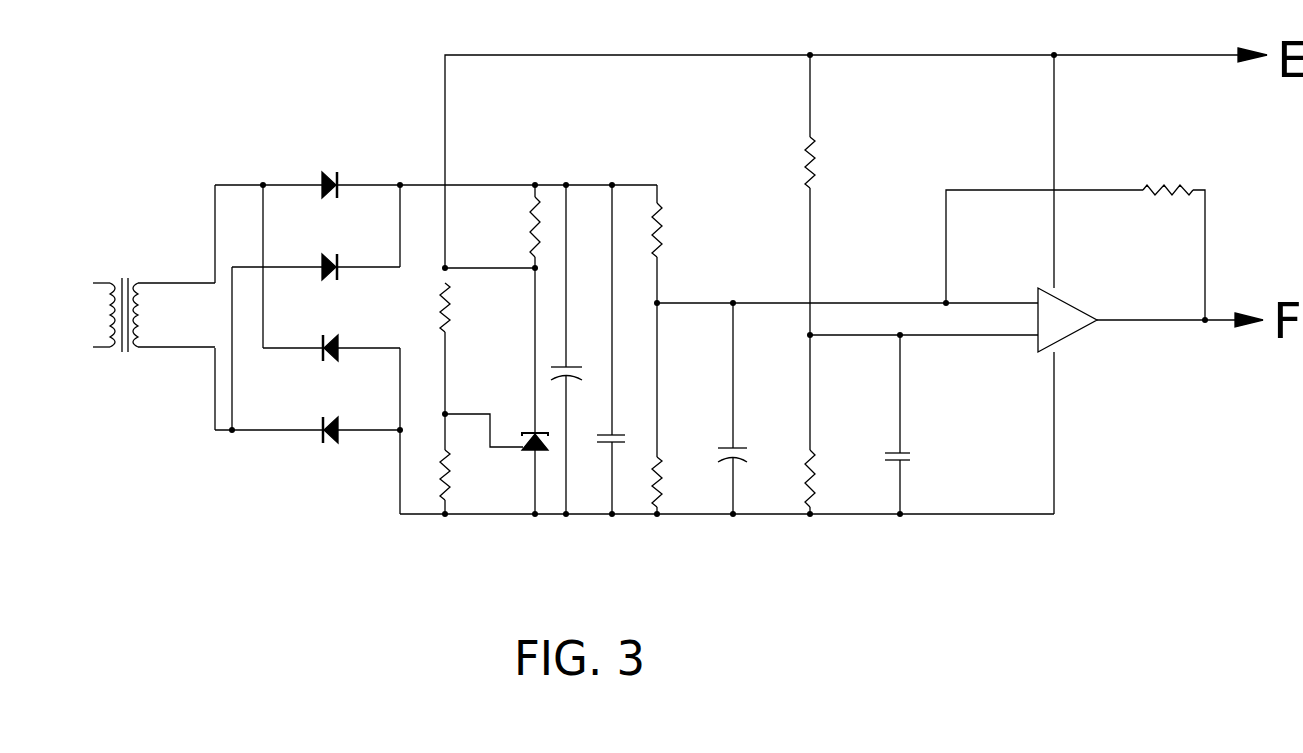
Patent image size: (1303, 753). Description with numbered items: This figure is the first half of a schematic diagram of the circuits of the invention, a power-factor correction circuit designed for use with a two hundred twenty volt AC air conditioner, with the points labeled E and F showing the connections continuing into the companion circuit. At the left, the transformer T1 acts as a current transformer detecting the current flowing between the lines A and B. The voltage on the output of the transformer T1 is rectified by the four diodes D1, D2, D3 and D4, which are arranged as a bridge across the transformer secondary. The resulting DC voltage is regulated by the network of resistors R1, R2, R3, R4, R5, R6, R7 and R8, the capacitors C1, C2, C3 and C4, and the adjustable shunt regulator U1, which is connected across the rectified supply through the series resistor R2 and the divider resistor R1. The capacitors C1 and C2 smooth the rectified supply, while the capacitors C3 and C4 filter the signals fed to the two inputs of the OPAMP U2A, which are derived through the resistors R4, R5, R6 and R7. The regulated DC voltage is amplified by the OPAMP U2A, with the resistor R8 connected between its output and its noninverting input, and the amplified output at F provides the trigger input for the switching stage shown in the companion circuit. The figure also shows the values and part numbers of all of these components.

The transformer T1 is at (87, 307).
The diode D1 is at (326, 163).
The diode D2 is at (326, 247).
The diode D3 is at (326, 328).
The diode D4 is at (326, 409).
The resistor R1 is at (479, 477).
The resistor R2 is at (412, 312).
The resistor R3 is at (502, 228).
The resistor R4 is at (694, 233).
The resistor R5 is at (687, 482).
The resistor R6 is at (844, 480).
The resistor R7 is at (846, 162).
The resistor R8 is at (1166, 196).
The capacitor C1 is at (578, 349).
The capacitor C2 is at (624, 349).
The capacitor C3 is at (744, 408).
The capacitor C4 is at (916, 424).
The adjustable shunt regulator U1 is at (496, 424).
The OPAMP U2A is at (1094, 322).